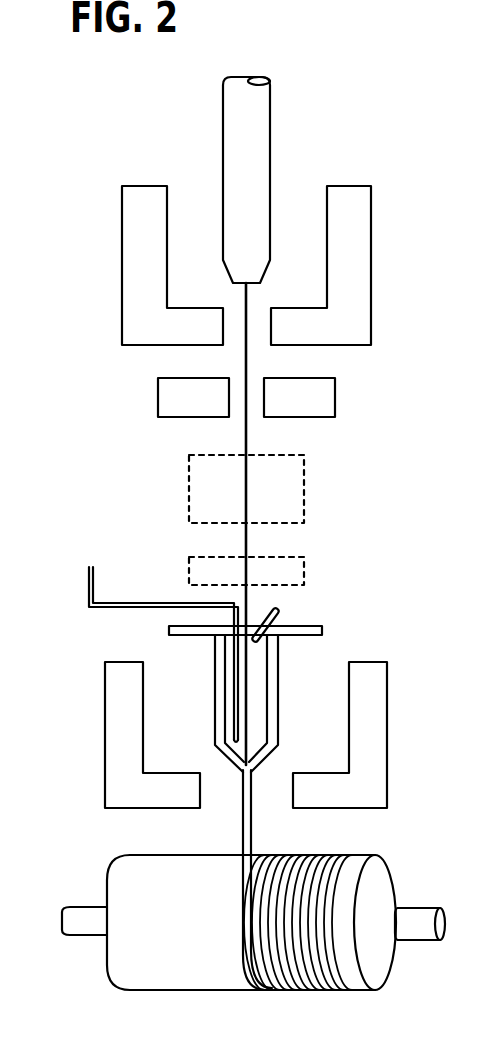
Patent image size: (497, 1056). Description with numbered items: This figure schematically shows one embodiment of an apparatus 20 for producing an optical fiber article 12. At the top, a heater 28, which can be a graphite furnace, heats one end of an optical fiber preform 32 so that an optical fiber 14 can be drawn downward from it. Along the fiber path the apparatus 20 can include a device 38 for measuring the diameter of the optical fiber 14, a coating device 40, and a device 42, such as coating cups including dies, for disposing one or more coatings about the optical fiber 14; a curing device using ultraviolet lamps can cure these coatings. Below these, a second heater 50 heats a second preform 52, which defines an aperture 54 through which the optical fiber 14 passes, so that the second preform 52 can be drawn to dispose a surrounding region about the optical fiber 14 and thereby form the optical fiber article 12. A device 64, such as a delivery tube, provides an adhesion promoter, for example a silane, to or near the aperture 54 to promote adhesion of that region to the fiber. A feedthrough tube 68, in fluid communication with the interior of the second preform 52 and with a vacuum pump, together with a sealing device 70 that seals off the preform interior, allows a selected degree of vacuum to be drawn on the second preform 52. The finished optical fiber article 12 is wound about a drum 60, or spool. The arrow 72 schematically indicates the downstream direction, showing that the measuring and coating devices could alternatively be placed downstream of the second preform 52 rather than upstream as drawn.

The optical fiber article 12 is at (242, 830).
The optical fiber 14 is at (246, 360).
The apparatus 20 is at (84, 152).
The heater 28 is at (371, 238).
The optical fiber preform 32 is at (271, 122).
The device for measuring the diameter 38 is at (335, 402).
The coating device 40 is at (304, 480).
The device for disposing coatings 42 is at (304, 572).
The second heater 50 is at (365, 712).
The second preform 52 is at (278, 675).
The aperture 54 is at (258, 695).
The drum 60 is at (203, 930).
The device for providing an adhesion promoter 64 is at (89, 582).
The feedthrough tube 68 is at (282, 612).
The sealing device 70 is at (185, 636).
The arrow 72 is at (350, 835).